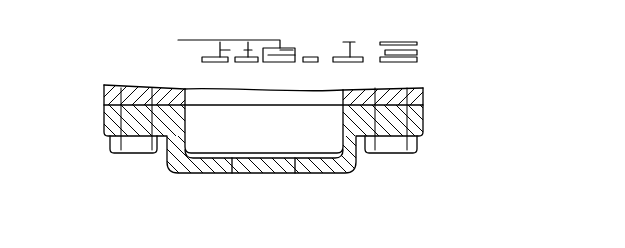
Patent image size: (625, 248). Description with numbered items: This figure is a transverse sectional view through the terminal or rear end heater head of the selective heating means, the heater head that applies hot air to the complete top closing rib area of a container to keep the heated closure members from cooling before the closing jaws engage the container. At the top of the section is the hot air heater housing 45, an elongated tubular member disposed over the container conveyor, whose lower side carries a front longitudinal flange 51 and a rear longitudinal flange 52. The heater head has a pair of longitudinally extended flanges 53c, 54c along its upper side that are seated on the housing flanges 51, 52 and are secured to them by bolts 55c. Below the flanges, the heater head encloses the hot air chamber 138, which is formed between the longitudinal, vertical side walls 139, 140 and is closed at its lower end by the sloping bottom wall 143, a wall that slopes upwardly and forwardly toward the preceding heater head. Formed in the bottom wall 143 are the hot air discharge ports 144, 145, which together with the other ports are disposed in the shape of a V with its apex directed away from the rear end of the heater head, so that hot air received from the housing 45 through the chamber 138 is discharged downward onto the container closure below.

The hot air heater housing 45 is at (138, 79).
The front longitudinal flange 51 is at (423, 96).
The rear longitudinal flange 52 is at (110, 96).
The longitudinally extended flange 53c is at (108, 122).
The longitudinally extended flange 54c is at (425, 117).
The bolt 55c is at (113, 143).
The hot air chamber 138 is at (343, 118).
The longitudinal vertical side wall 139 is at (342, 143).
The longitudinal vertical side wall 140 is at (176, 143).
The sloping bottom wall 143 is at (330, 174).
The hot air discharge port 144 is at (232, 173).
The hot air discharge port 145 is at (297, 173).